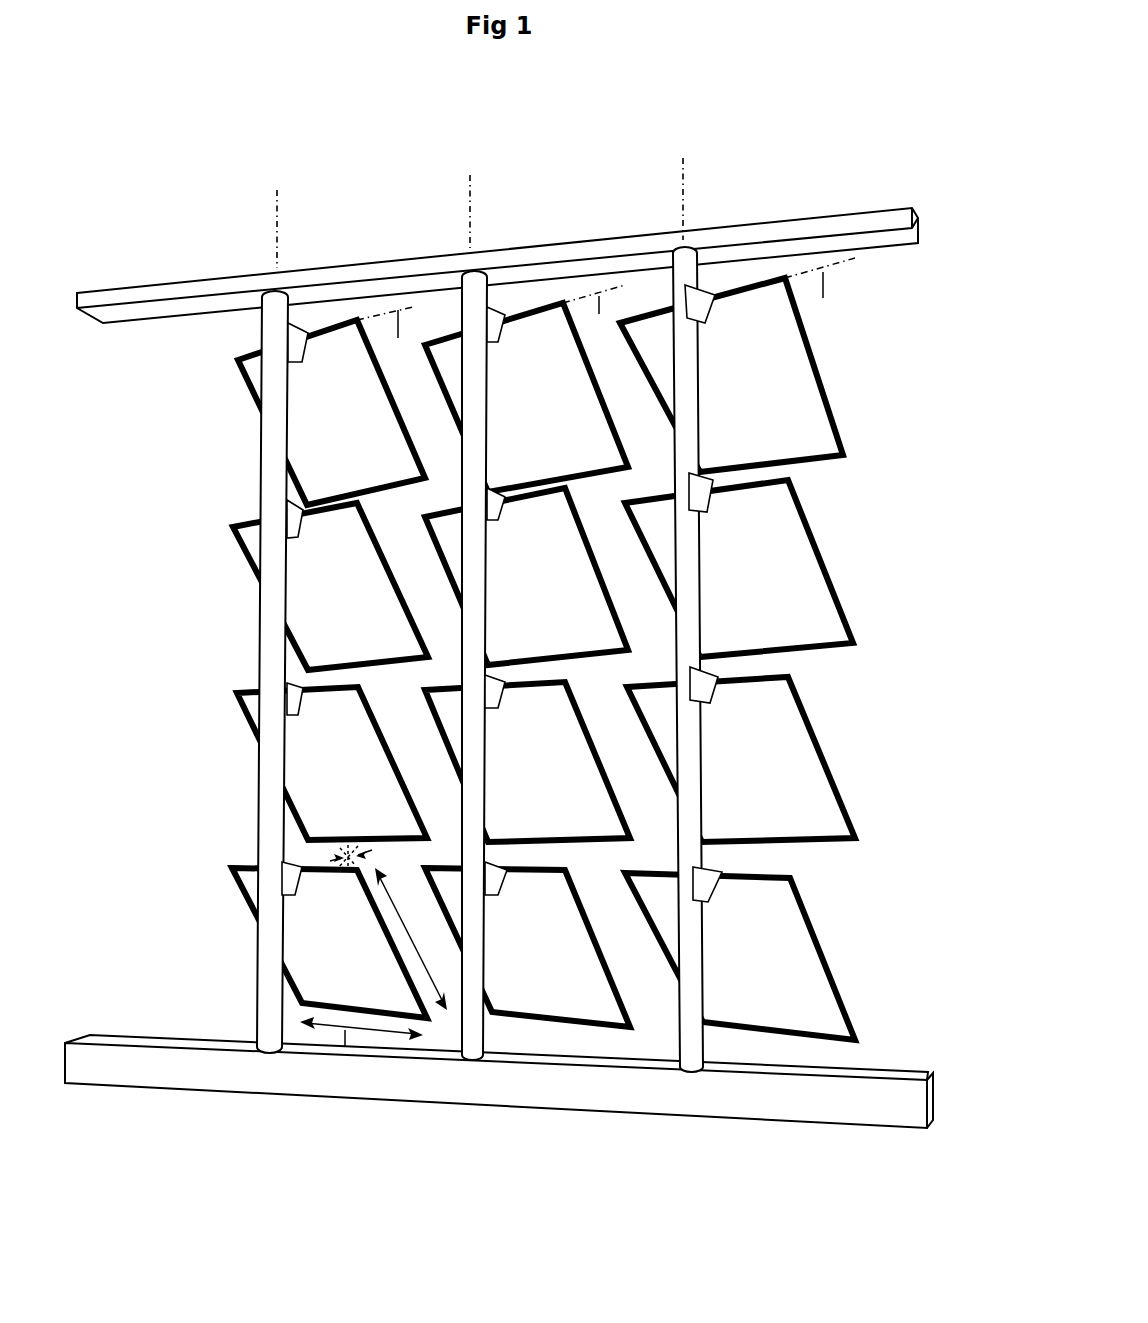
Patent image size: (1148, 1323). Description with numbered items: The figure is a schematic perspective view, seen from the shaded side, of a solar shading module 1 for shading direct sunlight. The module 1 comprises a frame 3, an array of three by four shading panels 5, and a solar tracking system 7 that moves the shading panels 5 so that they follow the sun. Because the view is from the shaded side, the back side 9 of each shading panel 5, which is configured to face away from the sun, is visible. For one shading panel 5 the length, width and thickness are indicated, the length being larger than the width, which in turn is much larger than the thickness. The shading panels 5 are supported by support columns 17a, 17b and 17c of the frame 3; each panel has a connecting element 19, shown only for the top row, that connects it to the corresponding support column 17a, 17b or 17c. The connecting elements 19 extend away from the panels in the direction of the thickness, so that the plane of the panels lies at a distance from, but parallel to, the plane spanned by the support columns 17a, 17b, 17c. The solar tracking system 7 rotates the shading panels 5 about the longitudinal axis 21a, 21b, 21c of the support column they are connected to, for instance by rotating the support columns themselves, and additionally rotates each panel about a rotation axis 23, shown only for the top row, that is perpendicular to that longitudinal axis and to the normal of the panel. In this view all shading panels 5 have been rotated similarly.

The solar shading module 1 is at (233, 201).
The frame 3 is at (843, 215).
The shading panels 5 is at (530, 659).
The solar tracking system 7 is at (885, 1088).
The back side 9 is at (761, 959).
The support column 17a is at (262, 460).
The support column 17b is at (462, 481).
The support column 17c is at (678, 640).
The connecting element 19 is at (514, 584).
The longitudinal axis 21a is at (301, 229).
The longitudinal axis 21b is at (493, 211).
The longitudinal axis 21c is at (707, 199).
The rotation axis 23 is at (606, 312).